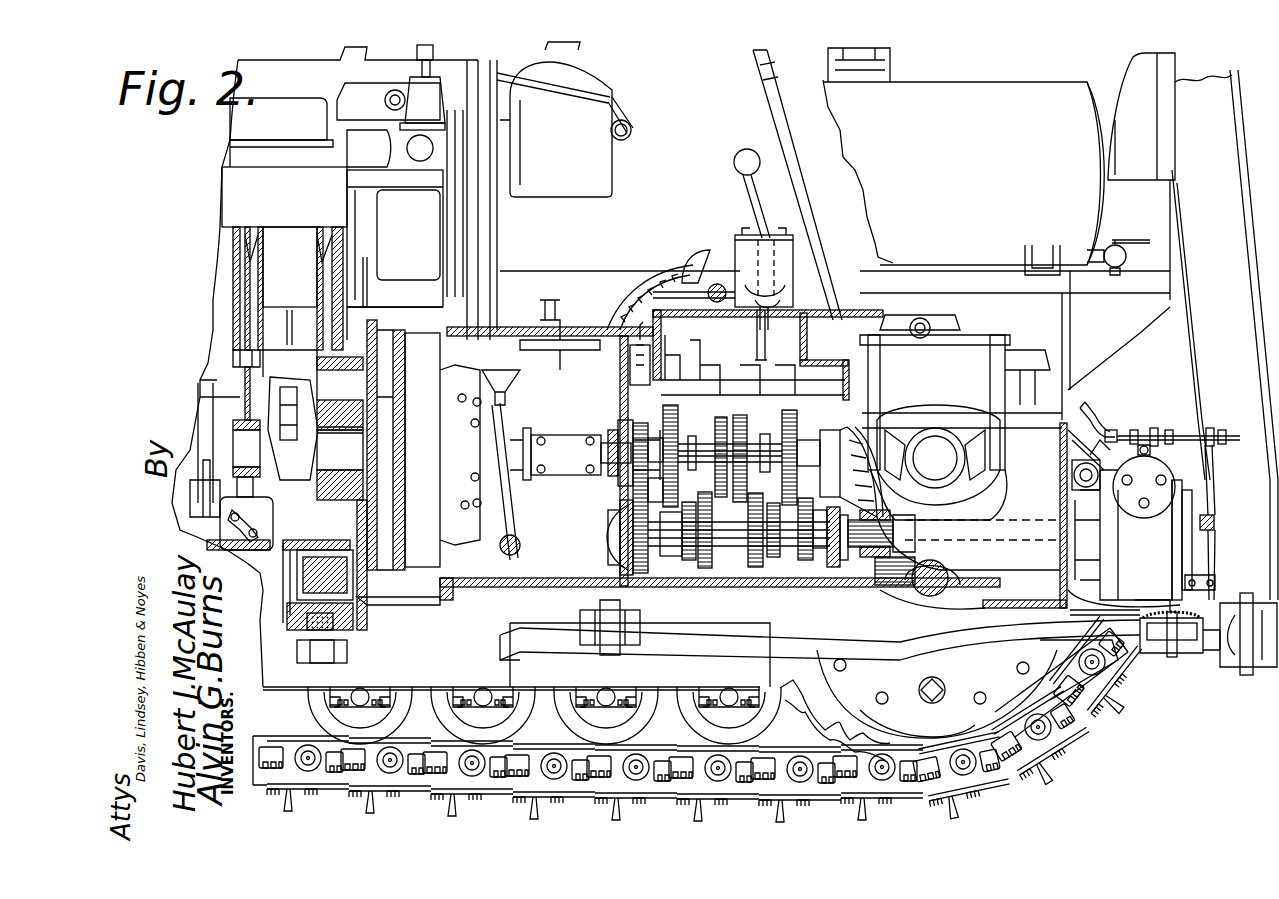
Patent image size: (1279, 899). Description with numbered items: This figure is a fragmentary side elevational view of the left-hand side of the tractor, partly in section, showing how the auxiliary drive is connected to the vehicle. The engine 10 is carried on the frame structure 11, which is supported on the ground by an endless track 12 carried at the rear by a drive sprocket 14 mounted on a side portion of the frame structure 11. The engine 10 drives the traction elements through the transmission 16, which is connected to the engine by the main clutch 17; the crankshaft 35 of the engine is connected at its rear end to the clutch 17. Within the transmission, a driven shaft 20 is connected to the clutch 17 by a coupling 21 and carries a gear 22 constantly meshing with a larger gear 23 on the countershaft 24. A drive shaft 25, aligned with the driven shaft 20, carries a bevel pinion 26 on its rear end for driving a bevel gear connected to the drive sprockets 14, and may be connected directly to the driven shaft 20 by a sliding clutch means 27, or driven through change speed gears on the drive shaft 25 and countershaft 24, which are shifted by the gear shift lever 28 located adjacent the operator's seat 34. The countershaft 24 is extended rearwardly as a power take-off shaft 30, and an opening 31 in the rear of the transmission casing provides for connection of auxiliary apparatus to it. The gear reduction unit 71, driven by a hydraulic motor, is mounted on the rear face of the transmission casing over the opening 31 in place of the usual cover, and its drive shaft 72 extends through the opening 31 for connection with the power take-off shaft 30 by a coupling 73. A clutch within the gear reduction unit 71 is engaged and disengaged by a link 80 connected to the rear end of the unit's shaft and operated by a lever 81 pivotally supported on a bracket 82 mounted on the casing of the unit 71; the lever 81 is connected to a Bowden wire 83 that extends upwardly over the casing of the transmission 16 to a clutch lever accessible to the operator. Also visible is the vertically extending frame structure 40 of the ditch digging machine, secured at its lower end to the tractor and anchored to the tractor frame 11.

The engine 10 is at (243, 208).
The frame structure 11 is at (282, 675).
The endless track 12 is at (1100, 713).
The drive sprocket 14 is at (1040, 678).
The transmission 16 is at (743, 566).
The main clutch 17 is at (453, 357).
The driven shaft 20 is at (607, 462).
The coupling 21 is at (562, 438).
The gear 22 is at (623, 403).
The larger gear 23 is at (620, 567).
The countershaft 24 is at (822, 557).
The drive shaft 25 is at (813, 447).
The bevel pinion 26 is at (961, 462).
The sliding clutch means 27 is at (655, 432).
The gear shift lever 28 is at (747, 187).
The power take-off shaft 30 is at (855, 553).
The opening 31 is at (1060, 518).
The seat 34 is at (1137, 70).
The crankshaft 35 is at (188, 463).
The frame structure 40 is at (1223, 118).
The gear reduction unit 71 is at (1153, 517).
The drive shaft 72 is at (1005, 525).
The coupling 73 is at (890, 553).
The link 80 is at (1215, 533).
The lever 81 is at (1214, 553).
The bracket 82 is at (1197, 582).
The Bowden wire 83 is at (1090, 410).